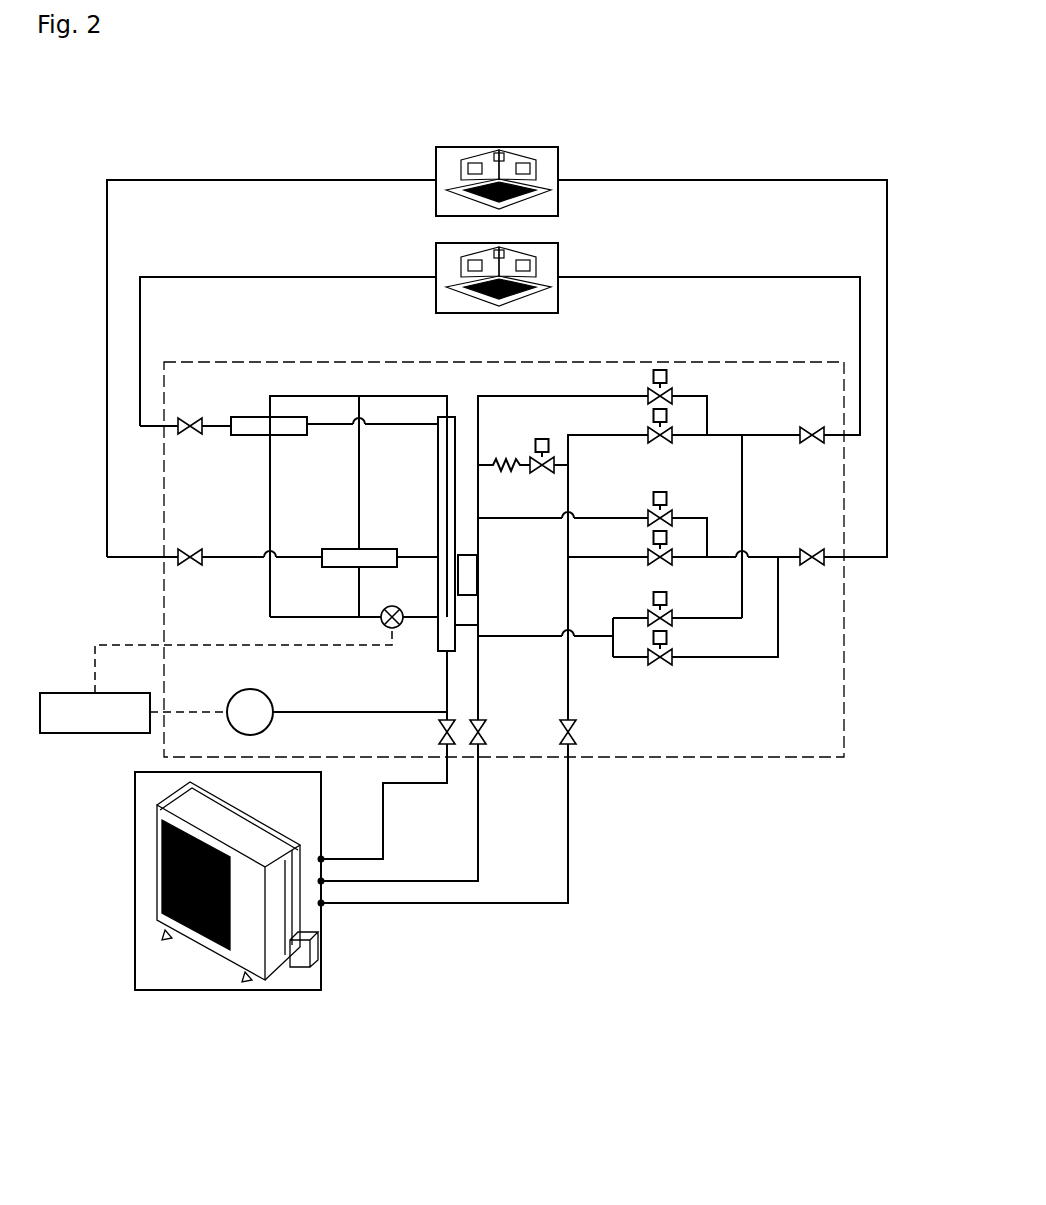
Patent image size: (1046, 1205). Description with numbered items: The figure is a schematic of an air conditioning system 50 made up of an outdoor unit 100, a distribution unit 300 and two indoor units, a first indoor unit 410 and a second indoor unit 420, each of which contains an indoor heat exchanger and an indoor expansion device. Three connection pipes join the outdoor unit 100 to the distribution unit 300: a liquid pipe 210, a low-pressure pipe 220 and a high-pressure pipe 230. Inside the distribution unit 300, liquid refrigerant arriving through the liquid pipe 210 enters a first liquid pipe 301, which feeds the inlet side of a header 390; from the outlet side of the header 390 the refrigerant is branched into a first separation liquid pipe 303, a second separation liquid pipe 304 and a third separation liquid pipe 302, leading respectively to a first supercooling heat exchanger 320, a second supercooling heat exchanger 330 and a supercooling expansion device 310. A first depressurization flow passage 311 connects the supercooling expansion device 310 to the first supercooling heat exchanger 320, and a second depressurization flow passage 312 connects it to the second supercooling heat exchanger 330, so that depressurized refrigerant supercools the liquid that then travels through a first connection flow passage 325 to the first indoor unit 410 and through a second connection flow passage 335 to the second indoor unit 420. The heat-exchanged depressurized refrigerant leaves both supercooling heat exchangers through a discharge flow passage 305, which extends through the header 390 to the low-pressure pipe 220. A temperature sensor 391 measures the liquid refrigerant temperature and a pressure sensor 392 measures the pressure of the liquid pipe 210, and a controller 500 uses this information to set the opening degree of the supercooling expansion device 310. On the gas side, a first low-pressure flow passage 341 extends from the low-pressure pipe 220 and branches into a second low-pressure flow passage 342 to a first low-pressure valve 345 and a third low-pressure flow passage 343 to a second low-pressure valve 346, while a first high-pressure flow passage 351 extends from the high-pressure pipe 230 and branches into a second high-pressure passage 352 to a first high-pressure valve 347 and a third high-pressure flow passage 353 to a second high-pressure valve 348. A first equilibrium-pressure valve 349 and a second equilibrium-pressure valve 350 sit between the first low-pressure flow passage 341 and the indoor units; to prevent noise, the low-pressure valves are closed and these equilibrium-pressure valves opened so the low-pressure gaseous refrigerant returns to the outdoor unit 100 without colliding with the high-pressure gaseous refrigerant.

The air conditioning system 50 is at (748, 160).
The outdoor unit 100 is at (217, 993).
The liquid pipe 210 is at (380, 837).
The low-pressure pipe 220 is at (478, 831).
The high-pressure pipe 230 is at (568, 832).
The distribution unit 300 is at (733, 762).
The first liquid pipe 301 is at (447, 690).
The third separation liquid pipe 302 is at (417, 618).
The first separation liquid pipe 303 is at (407, 557).
The second separation liquid pipe 304 is at (397, 424).
The discharge flow passage 305 is at (380, 396).
The supercooling expansion device 310 is at (398, 606).
The first depressurization flow passage 311 is at (359, 588).
The second depressurization flow passage 312 is at (270, 481).
The first supercooling heat exchanger 320 is at (333, 549).
The first connection flow passage 325 is at (107, 372).
The second supercooling heat exchanger 330 is at (245, 417).
The second connection flow passage 335 is at (140, 308).
The first low-pressure flow passage 341 is at (478, 680).
The second low-pressure flow passage 342 is at (521, 522).
The third low-pressure flow passage 343 is at (530, 396).
The first low-pressure valve 345 is at (674, 514).
The second low-pressure valve 346 is at (670, 370).
The first high-pressure valve 347 is at (674, 562).
The second high-pressure valve 348 is at (664, 442).
The first equilibrium-pressure valve 349 is at (667, 667).
The second equilibrium-pressure valve 350 is at (652, 618).
The first high-pressure flow passage 351 is at (570, 708).
The second high-pressure passage 352 is at (588, 560).
The third high-pressure flow passage 353 is at (603, 438).
The header 390 is at (455, 640).
The temperature sensor 391 is at (467, 555).
The pressure sensor 392 is at (257, 690).
The first indoor unit 410 is at (558, 158).
The second indoor unit 420 is at (558, 255).
The controller 500 is at (82, 693).